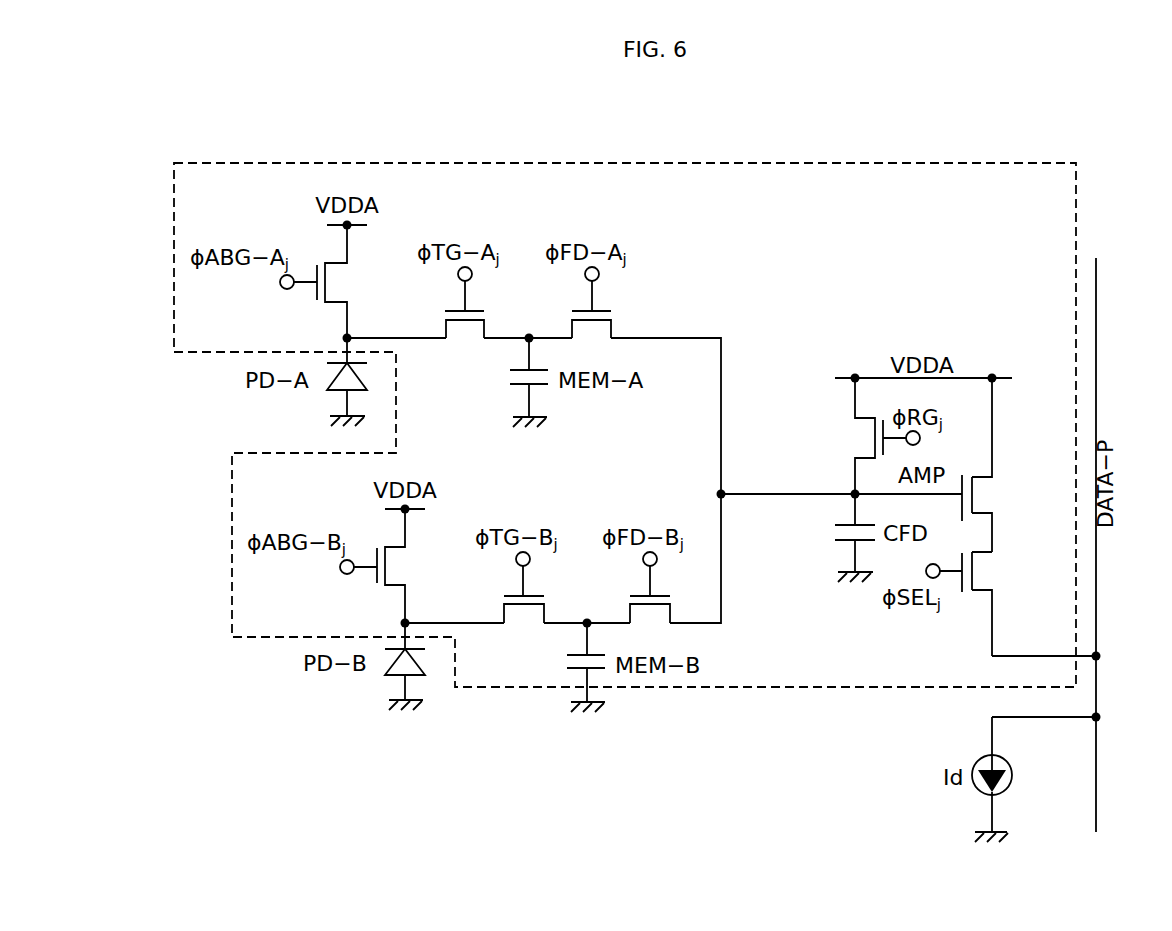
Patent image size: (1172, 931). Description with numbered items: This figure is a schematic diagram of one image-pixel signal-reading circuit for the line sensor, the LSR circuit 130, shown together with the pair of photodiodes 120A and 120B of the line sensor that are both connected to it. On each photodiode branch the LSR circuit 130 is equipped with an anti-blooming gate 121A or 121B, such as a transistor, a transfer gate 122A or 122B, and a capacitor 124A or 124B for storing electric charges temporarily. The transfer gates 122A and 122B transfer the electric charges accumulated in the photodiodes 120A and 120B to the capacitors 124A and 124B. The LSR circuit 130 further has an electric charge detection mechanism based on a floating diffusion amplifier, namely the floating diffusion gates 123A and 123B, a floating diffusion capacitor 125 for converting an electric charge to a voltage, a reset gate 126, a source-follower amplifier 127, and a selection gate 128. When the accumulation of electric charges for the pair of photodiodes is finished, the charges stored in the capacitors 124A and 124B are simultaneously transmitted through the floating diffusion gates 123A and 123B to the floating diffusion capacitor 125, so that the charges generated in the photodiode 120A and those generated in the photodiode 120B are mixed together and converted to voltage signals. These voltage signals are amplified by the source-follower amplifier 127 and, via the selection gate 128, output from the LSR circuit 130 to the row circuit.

The photodiode 120A is at (337, 396).
The anti-blooming gate 121A is at (317, 295).
The transfer gate 122A is at (450, 308).
The floating diffusion gate 123A is at (578, 308).
The capacitor 124A is at (517, 390).
The photodiode 120B is at (395, 681).
The anti-blooming gate 121B is at (377, 580).
The transfer gate 122B is at (510, 594).
The floating diffusion gate 123B is at (637, 594).
The capacitor 124B is at (573, 651).
The floating diffusion capacitor 125 is at (840, 525).
The reset gate 126 is at (870, 463).
The source-follower amplifier 127 is at (980, 520).
The selection gate 128 is at (980, 556).
The LSR circuit 130 is at (1078, 210).